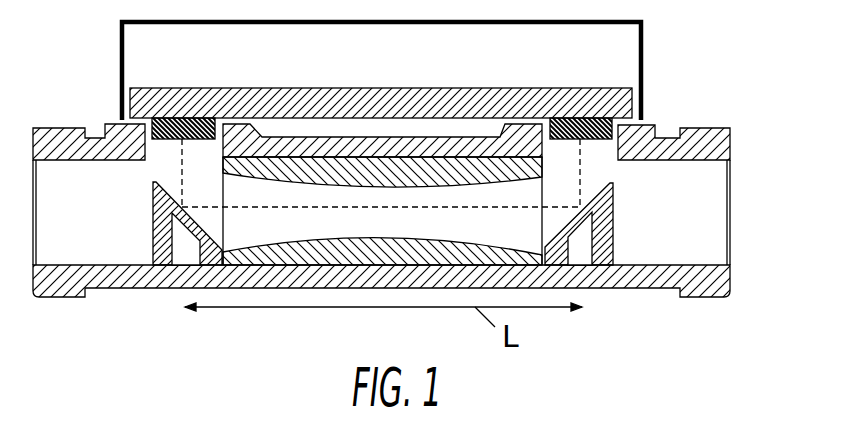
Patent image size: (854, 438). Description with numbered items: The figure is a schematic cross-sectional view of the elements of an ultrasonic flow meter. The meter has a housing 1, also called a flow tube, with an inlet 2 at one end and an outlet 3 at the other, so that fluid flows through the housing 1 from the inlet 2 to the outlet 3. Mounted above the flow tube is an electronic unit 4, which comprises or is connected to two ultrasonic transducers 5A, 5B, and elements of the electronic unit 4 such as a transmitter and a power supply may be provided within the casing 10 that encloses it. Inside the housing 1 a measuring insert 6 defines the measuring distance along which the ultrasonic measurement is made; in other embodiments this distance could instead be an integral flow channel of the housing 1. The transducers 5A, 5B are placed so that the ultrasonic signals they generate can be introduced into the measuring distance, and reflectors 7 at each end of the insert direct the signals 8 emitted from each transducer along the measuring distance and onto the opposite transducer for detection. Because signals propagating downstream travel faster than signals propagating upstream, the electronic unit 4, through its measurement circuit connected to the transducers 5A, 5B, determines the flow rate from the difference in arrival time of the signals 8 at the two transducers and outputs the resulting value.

The housing 1 is at (667, 277).
The inlet 2 is at (57, 231).
The outlet 3 is at (729, 229).
The electronic unit 4 is at (392, 90).
The ultrasonic transducer 5A is at (162, 139).
The ultrasonic transducer 5B is at (597, 140).
The measuring insert 6 is at (433, 258).
The reflectors 7 is at (612, 258).
The signals 8 is at (255, 207).
The casing 10 is at (638, 66).